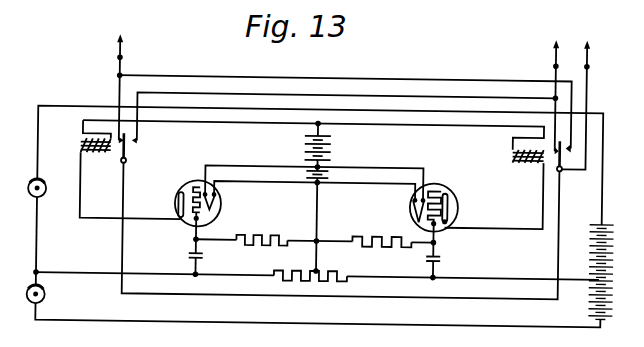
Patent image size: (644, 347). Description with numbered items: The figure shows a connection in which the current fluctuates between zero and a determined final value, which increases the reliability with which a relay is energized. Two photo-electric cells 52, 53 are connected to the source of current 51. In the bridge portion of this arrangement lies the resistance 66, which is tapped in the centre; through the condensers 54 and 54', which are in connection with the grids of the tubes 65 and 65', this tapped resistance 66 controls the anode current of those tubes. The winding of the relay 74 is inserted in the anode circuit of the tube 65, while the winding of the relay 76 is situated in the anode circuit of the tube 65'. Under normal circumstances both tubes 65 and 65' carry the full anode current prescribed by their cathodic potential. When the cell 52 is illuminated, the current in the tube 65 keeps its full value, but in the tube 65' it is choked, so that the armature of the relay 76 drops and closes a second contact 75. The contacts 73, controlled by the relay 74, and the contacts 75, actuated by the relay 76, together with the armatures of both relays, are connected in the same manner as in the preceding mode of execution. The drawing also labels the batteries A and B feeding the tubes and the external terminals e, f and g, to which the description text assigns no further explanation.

The source of current 51 is at (600, 270).
The photo-electric cell 52 is at (50, 191).
The photo-electric cell 53 is at (48, 296).
The condenser 54 is at (186, 254).
The condenser 54' is at (447, 259).
The tube 65 is at (195, 195).
The tube 65' is at (440, 200).
The resistance 66 is at (310, 283).
The contacts 73 is at (138, 148).
The relay 74 is at (86, 148).
The contact 75 is at (573, 154).
The relay 76 is at (517, 155).
The A battery A is at (325, 176).
The B battery B is at (328, 149).
The terminal e is at (585, 105).
The terminal f is at (561, 95).
The terminal g is at (127, 87).